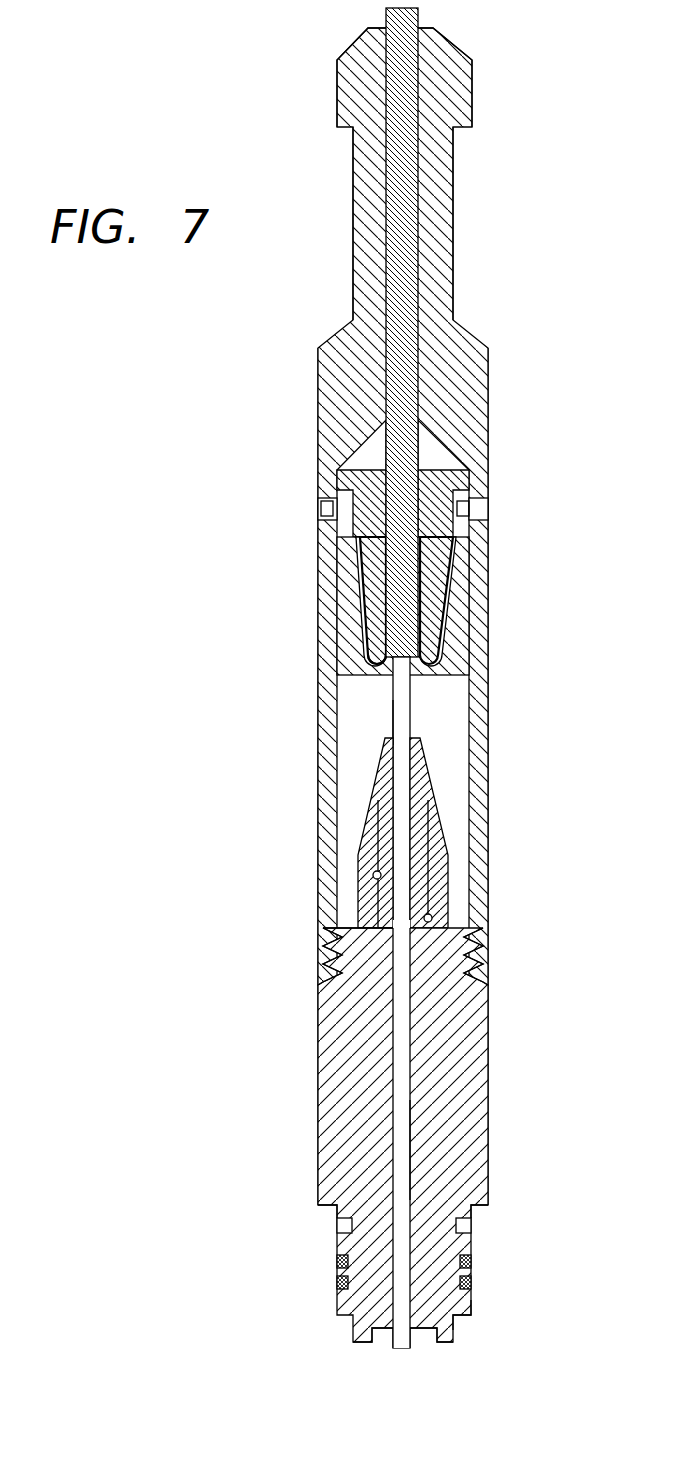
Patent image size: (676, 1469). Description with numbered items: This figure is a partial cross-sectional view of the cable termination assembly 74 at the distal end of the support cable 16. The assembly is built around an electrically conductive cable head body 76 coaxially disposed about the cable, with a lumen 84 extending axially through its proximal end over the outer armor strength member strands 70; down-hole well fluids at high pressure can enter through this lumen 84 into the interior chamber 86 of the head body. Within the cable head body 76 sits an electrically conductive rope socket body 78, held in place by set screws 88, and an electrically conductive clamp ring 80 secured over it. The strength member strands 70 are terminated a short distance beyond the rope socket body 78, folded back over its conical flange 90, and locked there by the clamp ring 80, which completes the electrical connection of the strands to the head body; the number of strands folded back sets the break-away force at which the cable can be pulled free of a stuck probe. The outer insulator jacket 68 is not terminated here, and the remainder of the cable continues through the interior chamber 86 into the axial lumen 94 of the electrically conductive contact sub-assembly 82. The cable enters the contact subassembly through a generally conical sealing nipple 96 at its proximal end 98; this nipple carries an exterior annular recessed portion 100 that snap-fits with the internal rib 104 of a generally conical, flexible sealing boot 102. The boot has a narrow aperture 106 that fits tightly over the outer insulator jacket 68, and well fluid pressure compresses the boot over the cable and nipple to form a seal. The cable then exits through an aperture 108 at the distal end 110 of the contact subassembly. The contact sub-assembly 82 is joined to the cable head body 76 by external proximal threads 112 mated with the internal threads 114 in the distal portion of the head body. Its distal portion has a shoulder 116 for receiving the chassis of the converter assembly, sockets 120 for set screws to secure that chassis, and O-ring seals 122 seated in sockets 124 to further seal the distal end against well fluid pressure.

The support cable 16 is at (384, 12).
The outer insulator jacket 68 is at (400, 1088).
The strength member strands 70 is at (378, 672).
The cable termination assembly 74 is at (218, 560).
The cable head body 76 is at (352, 160).
The rope socket body 78 is at (462, 484).
The clamp ring 80 is at (455, 625).
The contact sub-assembly 82 is at (335, 1020).
The lumen 84 is at (424, 12).
The interior chamber 86 is at (347, 735).
The set screws 88 is at (490, 510).
The conical flange 90 is at (424, 555).
The axial lumen 94 is at (415, 1152).
The sealing nipple 96 is at (413, 860).
The proximal end 98 is at (350, 923).
The annular recessed portion 100 is at (373, 873).
The sealing boot 102 is at (437, 838).
The internal rib 104 is at (432, 918).
The narrow aperture 106 is at (414, 732).
The aperture 108 is at (418, 1337).
The distal end 110 is at (478, 1322).
The external proximal threads 112 is at (325, 953).
The internal threads 114 is at (480, 968).
The shoulder 116 is at (345, 1233).
The sockets 120 is at (335, 1212).
The O-ring seals 122 is at (471, 1260).
The sockets 124 is at (338, 1260).